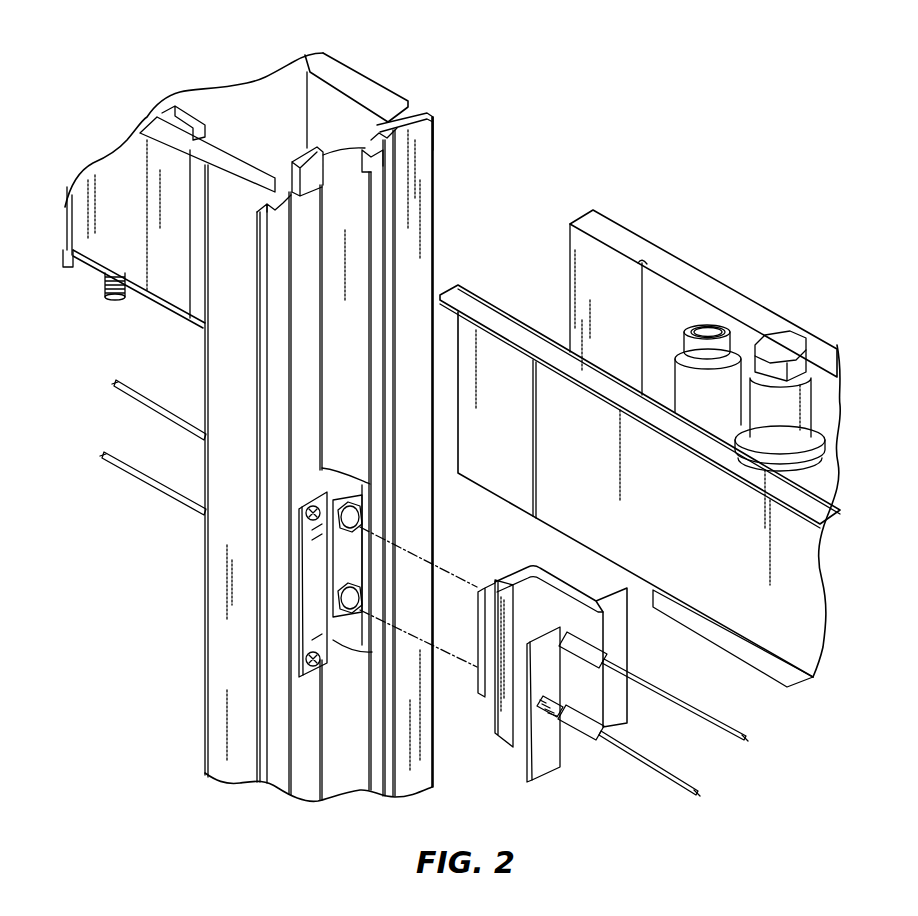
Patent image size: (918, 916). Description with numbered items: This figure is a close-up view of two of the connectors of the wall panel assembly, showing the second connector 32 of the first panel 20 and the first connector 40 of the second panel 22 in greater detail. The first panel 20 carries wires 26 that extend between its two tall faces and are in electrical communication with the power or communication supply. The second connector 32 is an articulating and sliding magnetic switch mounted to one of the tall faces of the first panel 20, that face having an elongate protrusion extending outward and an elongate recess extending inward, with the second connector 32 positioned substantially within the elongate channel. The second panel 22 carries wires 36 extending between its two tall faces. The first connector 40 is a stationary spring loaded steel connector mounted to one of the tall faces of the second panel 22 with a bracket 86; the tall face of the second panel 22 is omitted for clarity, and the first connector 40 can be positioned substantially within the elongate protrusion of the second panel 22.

The first panel 20 is at (395, 70).
The second panel 22 is at (690, 236).
The wires 26 is at (132, 465).
The second connector 32 is at (350, 464).
The wires 36 is at (676, 777).
The first connector 40 is at (480, 576).
The bracket 86 is at (543, 763).